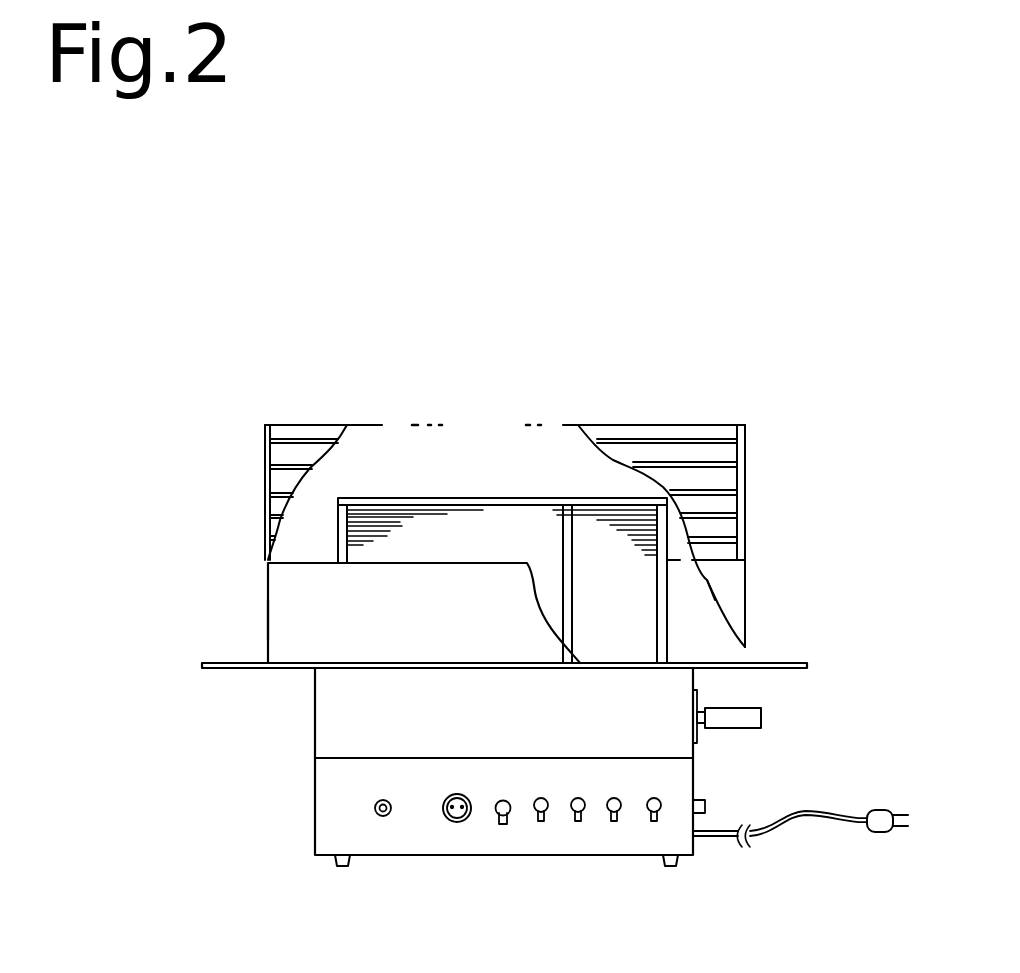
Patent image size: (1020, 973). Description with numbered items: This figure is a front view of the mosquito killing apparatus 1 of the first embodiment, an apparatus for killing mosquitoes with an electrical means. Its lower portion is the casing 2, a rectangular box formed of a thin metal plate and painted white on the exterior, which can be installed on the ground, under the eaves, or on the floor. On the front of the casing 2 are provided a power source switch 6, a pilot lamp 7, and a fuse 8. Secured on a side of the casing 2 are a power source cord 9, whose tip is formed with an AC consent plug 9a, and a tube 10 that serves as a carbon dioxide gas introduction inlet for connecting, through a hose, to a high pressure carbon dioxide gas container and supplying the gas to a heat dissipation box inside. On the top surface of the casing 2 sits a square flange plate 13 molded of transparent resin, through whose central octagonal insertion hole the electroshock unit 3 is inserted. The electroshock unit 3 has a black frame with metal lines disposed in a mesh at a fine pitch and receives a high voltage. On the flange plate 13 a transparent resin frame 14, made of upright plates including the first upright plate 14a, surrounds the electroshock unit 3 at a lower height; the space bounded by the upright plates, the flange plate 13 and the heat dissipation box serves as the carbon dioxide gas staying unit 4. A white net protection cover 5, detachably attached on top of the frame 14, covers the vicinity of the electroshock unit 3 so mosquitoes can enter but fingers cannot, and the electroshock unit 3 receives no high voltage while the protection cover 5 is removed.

The mosquito killing apparatus 1 is at (322, 368).
The casing 2 is at (316, 710).
The electroshock unit 3 is at (388, 498).
The carbon dioxide gas staying unit 4 is at (697, 620).
The protection cover 5 is at (660, 425).
The power source switch 6 is at (503, 826).
The pilot lamp 7 is at (382, 817).
The fuse 8 is at (457, 822).
The power source cord 9 is at (797, 827).
The AC consent plug 9a is at (880, 834).
The tube 10 is at (763, 718).
The flange plate 13 is at (780, 660).
The frame 14 is at (263, 582).
The first upright plate 14a is at (290, 613).